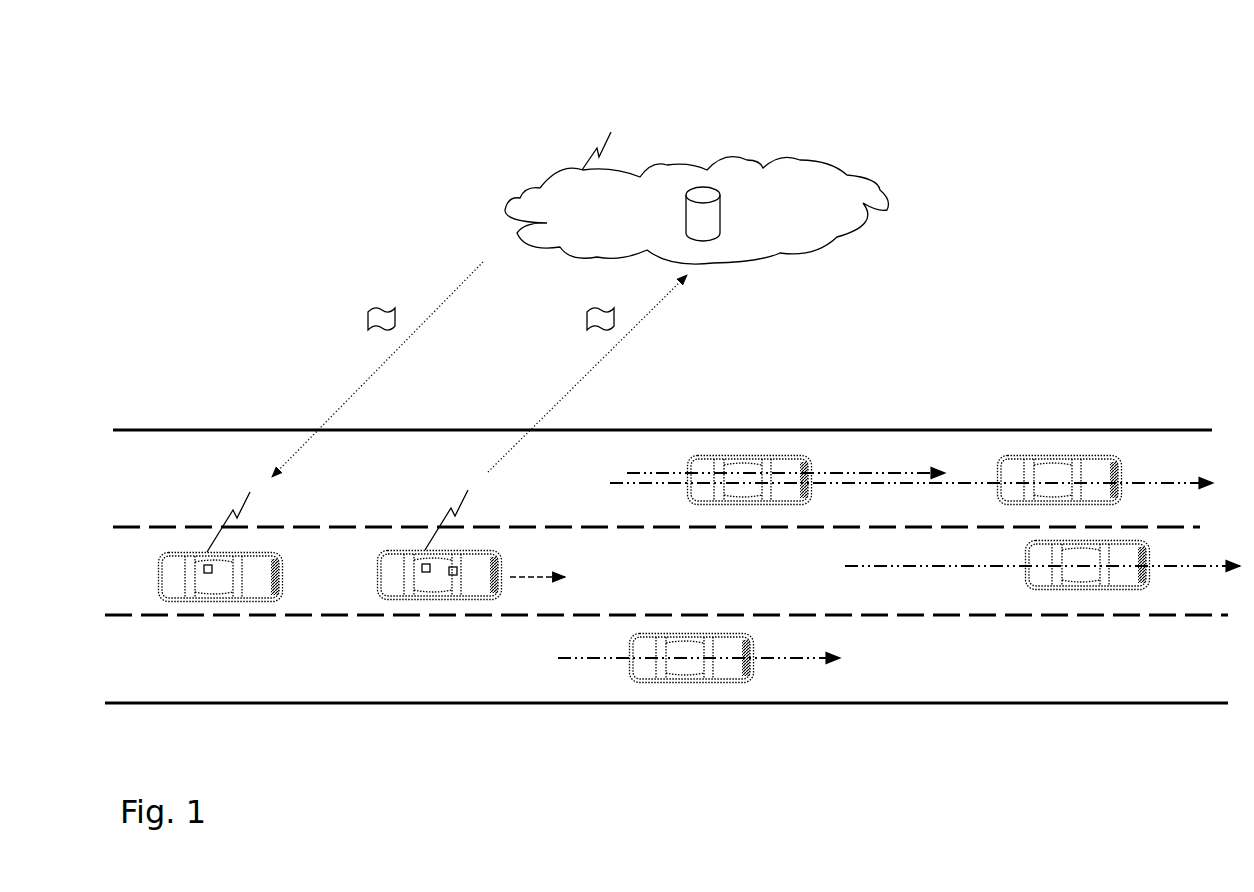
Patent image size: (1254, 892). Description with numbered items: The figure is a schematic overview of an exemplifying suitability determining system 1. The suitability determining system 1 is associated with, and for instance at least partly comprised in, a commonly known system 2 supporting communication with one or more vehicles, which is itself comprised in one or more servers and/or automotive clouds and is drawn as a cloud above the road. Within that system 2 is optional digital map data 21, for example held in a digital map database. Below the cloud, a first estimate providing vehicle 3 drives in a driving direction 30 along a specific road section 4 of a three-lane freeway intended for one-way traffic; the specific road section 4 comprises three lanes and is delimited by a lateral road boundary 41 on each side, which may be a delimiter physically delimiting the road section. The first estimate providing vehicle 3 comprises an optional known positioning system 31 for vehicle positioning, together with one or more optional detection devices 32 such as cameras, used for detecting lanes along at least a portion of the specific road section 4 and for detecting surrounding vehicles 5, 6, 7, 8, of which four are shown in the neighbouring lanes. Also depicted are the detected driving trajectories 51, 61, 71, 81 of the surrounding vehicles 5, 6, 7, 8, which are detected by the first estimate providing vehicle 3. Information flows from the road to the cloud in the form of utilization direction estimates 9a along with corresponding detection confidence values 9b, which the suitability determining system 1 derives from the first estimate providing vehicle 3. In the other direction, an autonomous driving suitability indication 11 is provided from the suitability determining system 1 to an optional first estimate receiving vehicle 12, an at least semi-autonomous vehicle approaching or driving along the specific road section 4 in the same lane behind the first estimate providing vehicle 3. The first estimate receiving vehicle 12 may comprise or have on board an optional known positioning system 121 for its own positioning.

The suitability determining system 1 is at (328, 140).
The system supporting communication with one or more vehicles 2 is at (518, 197).
The digital map data 21 is at (706, 188).
The autonomous driving suitability indication 11 is at (368, 317).
The utilization direction estimates 9a is at (561, 307).
The detection confidence values 9b is at (587, 317).
The specific road section 4 is at (509, 720).
The lateral road boundary 41 is at (968, 428).
The first estimate receiving vehicle 12 is at (180, 607).
The positioning system 121 is at (213, 574).
The first estimate providing vehicle 3 is at (400, 607).
The positioning system 31 is at (430, 572).
The detection devices 32 is at (454, 572).
The driving direction 30 is at (537, 563).
The surrounding vehicle 5 is at (684, 494).
The detected driving trajectory 51 is at (830, 468).
The surrounding vehicle 6 is at (993, 493).
The detected driving trajectory 61 is at (1143, 477).
The surrounding vehicle 7 is at (1022, 577).
The detected driving trajectory 71 is at (1177, 562).
The surrounding vehicle 8 is at (625, 668).
The detected driving trajectory 81 is at (793, 652).